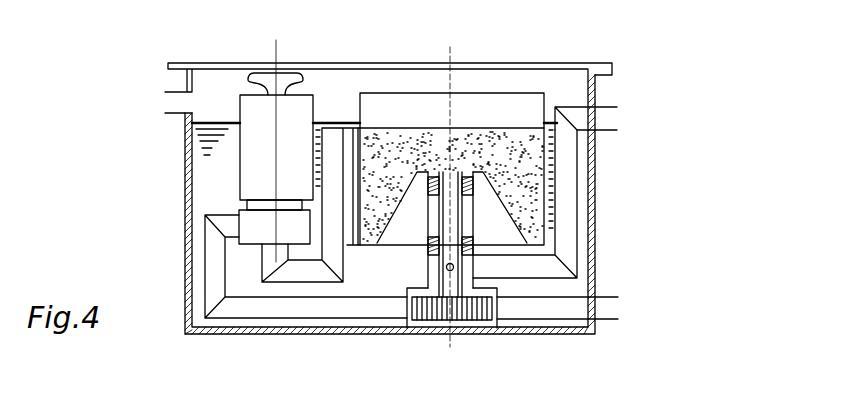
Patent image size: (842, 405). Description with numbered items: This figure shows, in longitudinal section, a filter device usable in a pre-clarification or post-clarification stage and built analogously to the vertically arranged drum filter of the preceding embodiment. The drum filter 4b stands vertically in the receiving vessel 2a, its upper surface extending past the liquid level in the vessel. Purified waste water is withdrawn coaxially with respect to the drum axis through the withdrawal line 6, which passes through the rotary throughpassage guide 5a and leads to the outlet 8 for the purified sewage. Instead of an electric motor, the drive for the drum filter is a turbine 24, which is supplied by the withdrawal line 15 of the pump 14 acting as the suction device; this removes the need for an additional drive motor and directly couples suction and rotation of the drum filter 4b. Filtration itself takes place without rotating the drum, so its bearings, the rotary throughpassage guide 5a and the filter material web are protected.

The receiving vessel 2a is at (219, 338).
The drum filter 4b is at (379, 100).
The rotary throughpassage guide 5a is at (428, 271).
The withdrawal line 6 is at (538, 270).
The outlet 8 is at (605, 118).
The pump 14 is at (247, 161).
The withdrawal line 15 is at (217, 271).
The turbine 24 is at (430, 321).